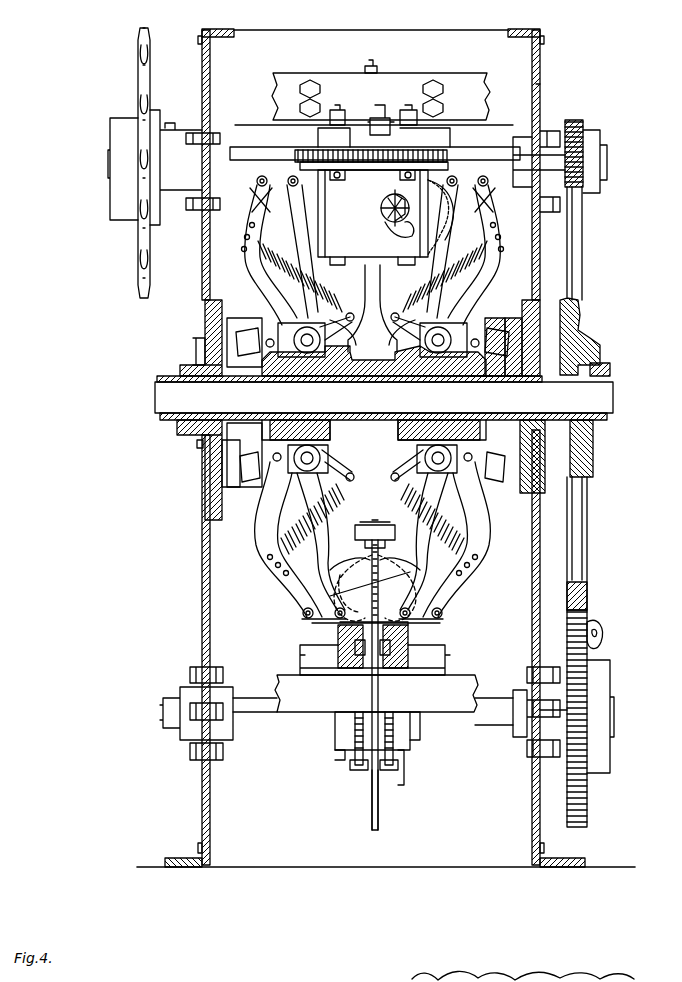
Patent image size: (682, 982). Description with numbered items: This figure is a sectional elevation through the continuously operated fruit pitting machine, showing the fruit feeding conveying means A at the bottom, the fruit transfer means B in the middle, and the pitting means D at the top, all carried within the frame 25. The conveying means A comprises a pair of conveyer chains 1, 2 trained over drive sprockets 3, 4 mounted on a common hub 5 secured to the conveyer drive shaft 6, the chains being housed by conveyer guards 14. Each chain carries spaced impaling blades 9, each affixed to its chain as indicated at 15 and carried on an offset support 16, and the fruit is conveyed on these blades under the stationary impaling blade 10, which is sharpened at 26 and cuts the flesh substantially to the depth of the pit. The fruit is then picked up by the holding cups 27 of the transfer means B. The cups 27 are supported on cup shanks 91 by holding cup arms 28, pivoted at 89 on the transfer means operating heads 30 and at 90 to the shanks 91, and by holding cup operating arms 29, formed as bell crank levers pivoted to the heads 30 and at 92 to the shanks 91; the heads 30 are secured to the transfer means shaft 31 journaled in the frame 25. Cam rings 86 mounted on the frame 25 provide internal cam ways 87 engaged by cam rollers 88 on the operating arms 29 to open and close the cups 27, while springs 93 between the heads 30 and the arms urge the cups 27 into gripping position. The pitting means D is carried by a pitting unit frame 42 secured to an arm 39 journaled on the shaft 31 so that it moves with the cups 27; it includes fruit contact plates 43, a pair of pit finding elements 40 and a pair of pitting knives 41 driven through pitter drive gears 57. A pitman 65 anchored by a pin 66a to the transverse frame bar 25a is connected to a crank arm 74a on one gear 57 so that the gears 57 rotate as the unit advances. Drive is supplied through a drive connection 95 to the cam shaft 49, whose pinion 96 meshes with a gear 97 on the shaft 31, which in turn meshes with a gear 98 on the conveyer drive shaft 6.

The conveyer chain 1 is at (395, 765).
The conveyer chain 2 is at (357, 765).
The drive sprocket 3 is at (393, 725).
The drive sprocket 4 is at (358, 725).
The common hub 5 is at (340, 745).
The conveyer drive shaft 6 is at (502, 730).
The impaling blade 9 is at (345, 615).
The stationary impaling blade 10 is at (365, 540).
The conveyer guard 14 is at (338, 638).
The blade affixing means 15 is at (375, 776).
The offset support 16 is at (392, 768).
The frame 25 is at (545, 84).
The transverse frame bar 25a is at (465, 78).
The sharpened edge 26 is at (405, 572).
The holding cup 27 is at (440, 210).
The holding cup arm 28 is at (240, 235).
The holding cup operating arm 29 is at (295, 290).
The transfer means operating head 30 is at (292, 372).
The transfer means shaft 31 is at (613, 395).
The arm 39 is at (382, 280).
The pit finding element 40 is at (383, 220).
The pitting knife 41 is at (405, 240).
The fruit pitting unit frame 42 is at (342, 255).
The fruit contact plate 43 is at (400, 190).
The cam shaft 49 is at (607, 160).
The pitter drive gear 57 is at (300, 147).
The pitman 65 is at (372, 118).
The pin 66a is at (373, 64).
The crank arm 74a is at (390, 128).
The cam ring 86 is at (510, 312).
The internal cam way 87 is at (535, 340).
The cam roller 88 is at (495, 350).
The pivot 89 is at (467, 332).
The pivot 90 is at (261, 180).
The cup shank 91 is at (306, 220).
The pivot 92 is at (293, 180).
The spring 93 is at (265, 312).
The drive connection 95 is at (138, 33).
The pinion 96 is at (582, 120).
The gear 97 is at (585, 600).
The gear 98 is at (585, 826).
The fruit feeding conveying means A is at (402, 825).
The fruit transfer means B is at (525, 238).
The pitting means D is at (331, 198).